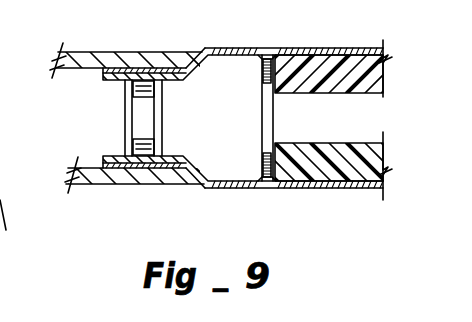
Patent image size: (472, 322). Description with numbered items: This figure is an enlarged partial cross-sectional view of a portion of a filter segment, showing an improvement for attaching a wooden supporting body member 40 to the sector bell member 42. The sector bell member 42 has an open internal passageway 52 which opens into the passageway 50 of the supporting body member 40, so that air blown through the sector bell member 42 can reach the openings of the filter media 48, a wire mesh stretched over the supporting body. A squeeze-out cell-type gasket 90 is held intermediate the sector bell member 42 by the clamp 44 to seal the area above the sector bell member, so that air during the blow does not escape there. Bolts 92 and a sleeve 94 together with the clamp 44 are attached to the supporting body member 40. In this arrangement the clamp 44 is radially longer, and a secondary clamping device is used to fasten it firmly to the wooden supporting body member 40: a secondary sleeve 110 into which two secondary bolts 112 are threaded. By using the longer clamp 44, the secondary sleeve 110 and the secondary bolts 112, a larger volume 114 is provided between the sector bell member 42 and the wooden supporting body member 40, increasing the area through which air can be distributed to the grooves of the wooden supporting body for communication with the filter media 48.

The internal supporting body member 40 is at (366, 121).
The sector bell member 42 is at (123, 24).
The clamp 44 is at (232, 48).
The filter media 48 is at (103, 71).
The open internal passageway of supporting body member 50 is at (318, 128).
The open internal passageway of sector bell member 52 is at (62, 150).
The squeeze-out cell-type gasket 90 is at (185, 60).
The bolts 92 is at (140, 98).
The sleeve 94 is at (128, 113).
The secondary sleeve 110 is at (262, 145).
The secondary bolts 112 is at (268, 53).
The larger volume 114 is at (217, 123).